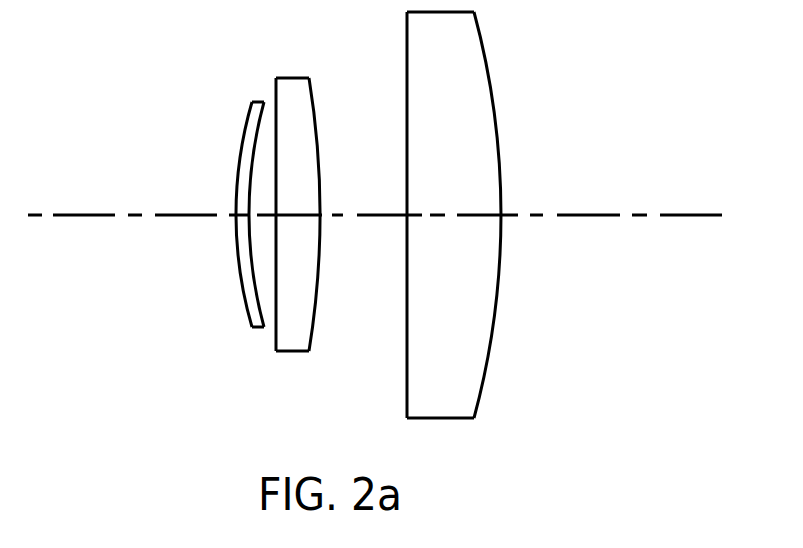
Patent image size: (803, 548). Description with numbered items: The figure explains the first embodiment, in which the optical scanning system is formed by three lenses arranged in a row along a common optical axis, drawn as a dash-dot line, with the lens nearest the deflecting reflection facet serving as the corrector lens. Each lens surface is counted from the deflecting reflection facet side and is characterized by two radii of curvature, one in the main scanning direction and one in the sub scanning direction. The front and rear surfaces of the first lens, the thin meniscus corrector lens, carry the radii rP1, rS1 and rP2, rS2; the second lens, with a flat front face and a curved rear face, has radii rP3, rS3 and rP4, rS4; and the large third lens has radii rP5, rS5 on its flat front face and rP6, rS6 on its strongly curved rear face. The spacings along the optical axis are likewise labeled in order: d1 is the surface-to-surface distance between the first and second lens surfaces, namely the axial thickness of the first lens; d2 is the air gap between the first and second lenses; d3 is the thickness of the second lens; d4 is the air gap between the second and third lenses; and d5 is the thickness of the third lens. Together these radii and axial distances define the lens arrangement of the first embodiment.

The radius of curvature of first lens surface in main scanning direction rP1 is at (238, 145).
The radius of curvature of first lens surface in sub scanning direction rS1 is at (216, 202).
The radius of curvature of second lens surface in main scanning direction rP2 is at (250, 115).
The radius of curvature of second lens surface in sub scanning direction rS2 is at (233, 179).
The radius of curvature of third lens surface in main scanning direction rP3 is at (276, 104).
The radius of curvature of third lens surface in sub scanning direction rS3 is at (330, 180).
The radius of curvature of fourth lens surface in main scanning direction rP4 is at (344, 101).
The radius of curvature of fourth lens surface in sub scanning direction rS4 is at (351, 214).
The radius of curvature of fifth lens surface in main scanning direction rP5 is at (500, 33).
The radius of curvature of fifth lens surface in sub scanning direction rS5 is at (513, 209).
The radius of curvature of sixth lens surface in main scanning direction rP6 is at (563, 115).
The radius of curvature of sixth lens surface in sub scanning direction rS6 is at (558, 215).
The surface-to-surface distance between first and second lens surfaces d1 is at (243, 216).
The surface-to-surface distance between second and third lens surfaces d2 is at (257, 215).
The surface-to-surface distance between third and fourth lens surfaces d3 is at (293, 215).
The surface-to-surface distance between fourth and fifth lens surfaces d4 is at (390, 215).
The surface-to-surface distance between fifth and sixth lens surfaces d5 is at (433, 250).